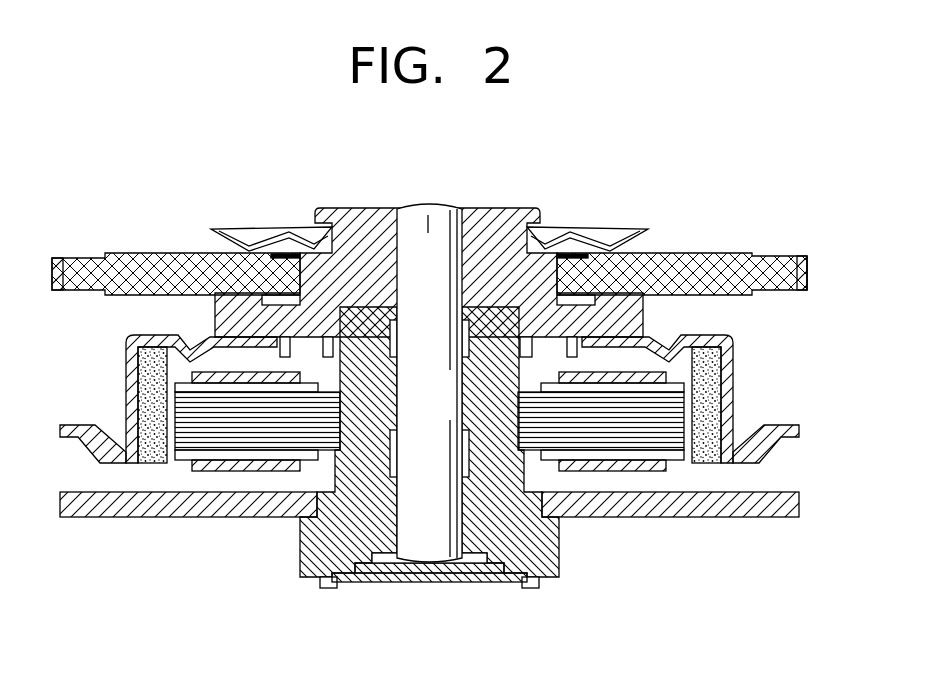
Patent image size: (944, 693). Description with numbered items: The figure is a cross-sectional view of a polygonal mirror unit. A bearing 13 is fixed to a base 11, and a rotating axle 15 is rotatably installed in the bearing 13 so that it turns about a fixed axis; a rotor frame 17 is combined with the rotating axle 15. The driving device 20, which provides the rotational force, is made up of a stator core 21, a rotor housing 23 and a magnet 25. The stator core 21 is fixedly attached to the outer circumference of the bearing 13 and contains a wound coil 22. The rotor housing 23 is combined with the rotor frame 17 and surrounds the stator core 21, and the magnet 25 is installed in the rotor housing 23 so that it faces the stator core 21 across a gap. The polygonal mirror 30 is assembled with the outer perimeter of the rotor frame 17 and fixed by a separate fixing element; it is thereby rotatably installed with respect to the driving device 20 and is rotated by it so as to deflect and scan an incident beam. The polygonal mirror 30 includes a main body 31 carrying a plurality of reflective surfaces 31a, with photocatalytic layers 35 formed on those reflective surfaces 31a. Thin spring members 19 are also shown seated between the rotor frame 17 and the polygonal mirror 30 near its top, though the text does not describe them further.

The base 11 is at (758, 517).
The bearing 13 is at (556, 583).
The rotating axle 15 is at (424, 540).
The rotor frame 17 is at (492, 222).
The spring 19 is at (627, 228).
The driving device 20 is at (446, 448).
The stator core 21 is at (648, 432).
The coil 22 is at (606, 471).
The rotor housing 23 is at (733, 396).
The magnet 25 is at (707, 452).
The polygonal mirror 30 is at (467, 239).
The main body 31 is at (775, 270).
The reflective surfaces 31a is at (808, 283).
The photocatalytic layers 35 is at (808, 268).